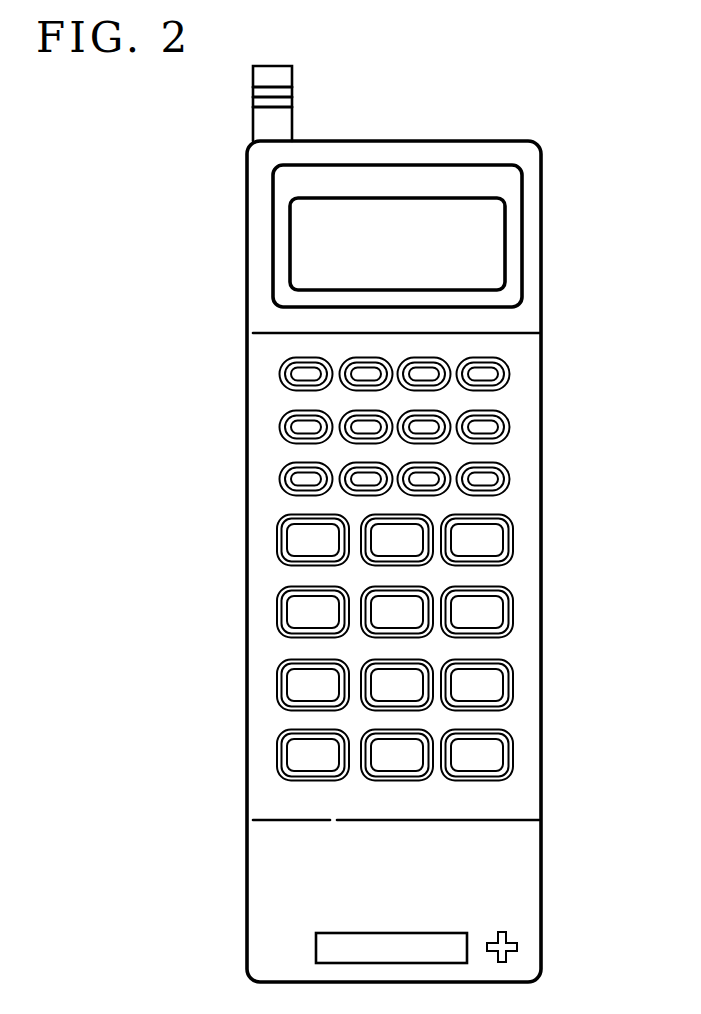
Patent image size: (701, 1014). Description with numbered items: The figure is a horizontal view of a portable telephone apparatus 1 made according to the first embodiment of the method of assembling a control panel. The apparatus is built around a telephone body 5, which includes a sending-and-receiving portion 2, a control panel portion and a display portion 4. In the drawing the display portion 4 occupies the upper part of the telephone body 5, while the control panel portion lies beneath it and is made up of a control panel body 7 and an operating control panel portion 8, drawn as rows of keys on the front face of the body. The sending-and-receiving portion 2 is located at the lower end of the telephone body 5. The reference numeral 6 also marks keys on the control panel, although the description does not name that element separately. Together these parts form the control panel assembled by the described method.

The portable telephone apparatus 1 is at (553, 312).
The sending-and-receiving portion 2 is at (522, 873).
The display portion 4 is at (493, 223).
The telephone body 5 is at (541, 435).
The key 6 is at (297, 426).
The control panel body 7 is at (523, 685).
The operating control panel portion 8 is at (493, 612).